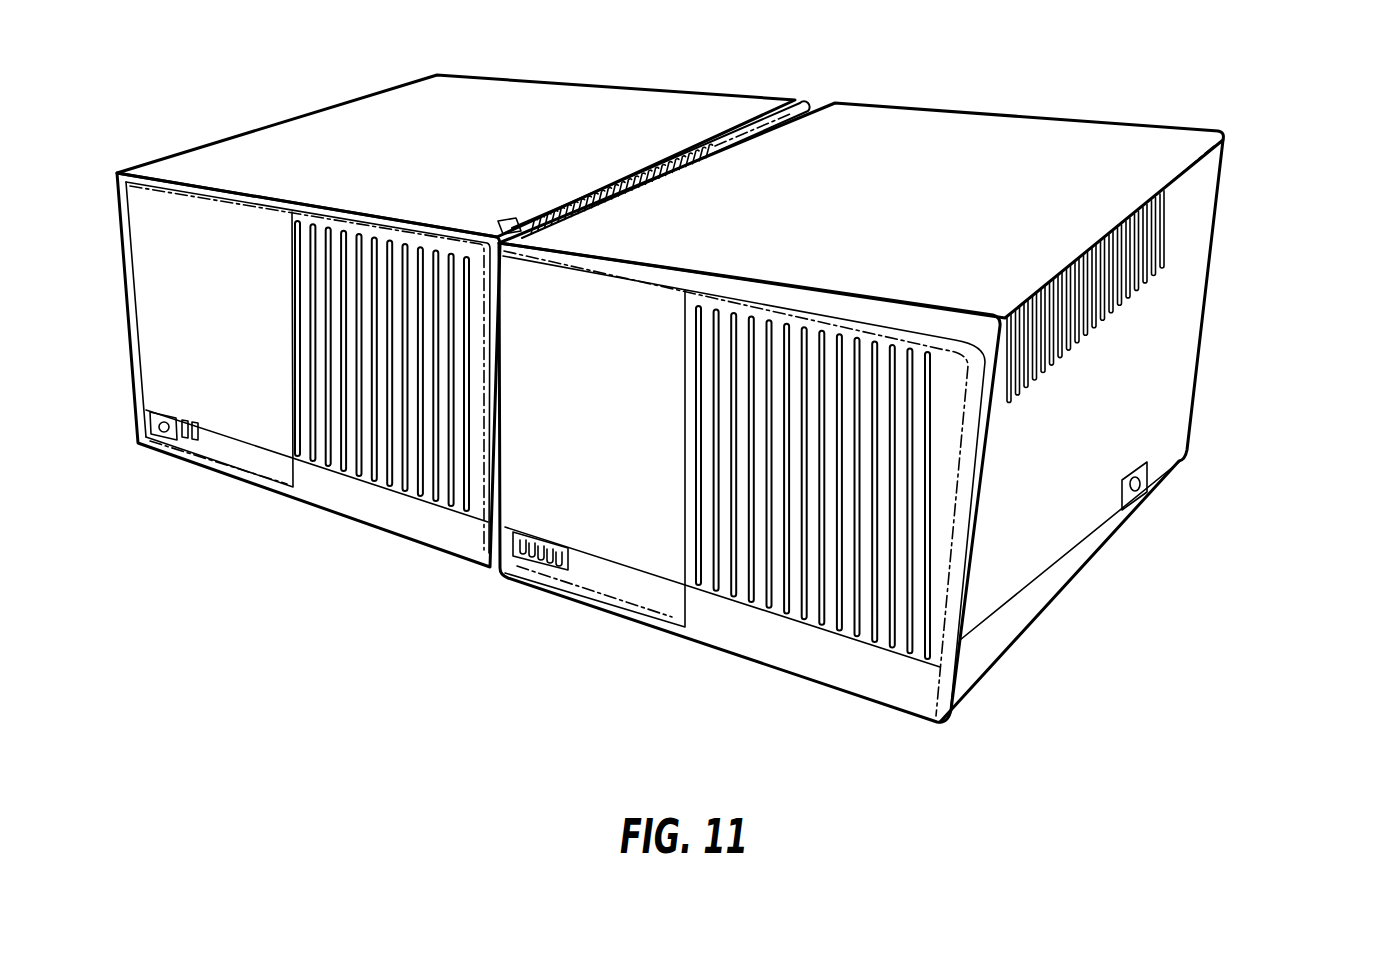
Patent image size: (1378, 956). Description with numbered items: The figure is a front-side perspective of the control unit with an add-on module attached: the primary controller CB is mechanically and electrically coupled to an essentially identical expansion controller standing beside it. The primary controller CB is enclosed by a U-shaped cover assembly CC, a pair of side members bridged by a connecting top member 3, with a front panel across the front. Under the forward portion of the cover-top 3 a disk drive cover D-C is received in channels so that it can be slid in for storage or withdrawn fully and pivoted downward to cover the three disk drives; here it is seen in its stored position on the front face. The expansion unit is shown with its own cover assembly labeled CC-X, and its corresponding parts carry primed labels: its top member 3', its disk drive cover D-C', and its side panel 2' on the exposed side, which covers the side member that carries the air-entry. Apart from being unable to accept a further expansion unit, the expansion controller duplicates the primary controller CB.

The primary controller CB is at (280, 118).
The U-shaped cover assembly CC is at (650, 84).
The expansion cabinet CC-X is at (1056, 107).
The connecting top member 3 is at (456, 156).
The top plate of expansion cabinet 3' is at (861, 210).
The disk drive cover D-C is at (219, 349).
The door cover of expansion cabinet D-C' is at (595, 458).
The side plate of expansion cabinet 2' is at (1081, 431).